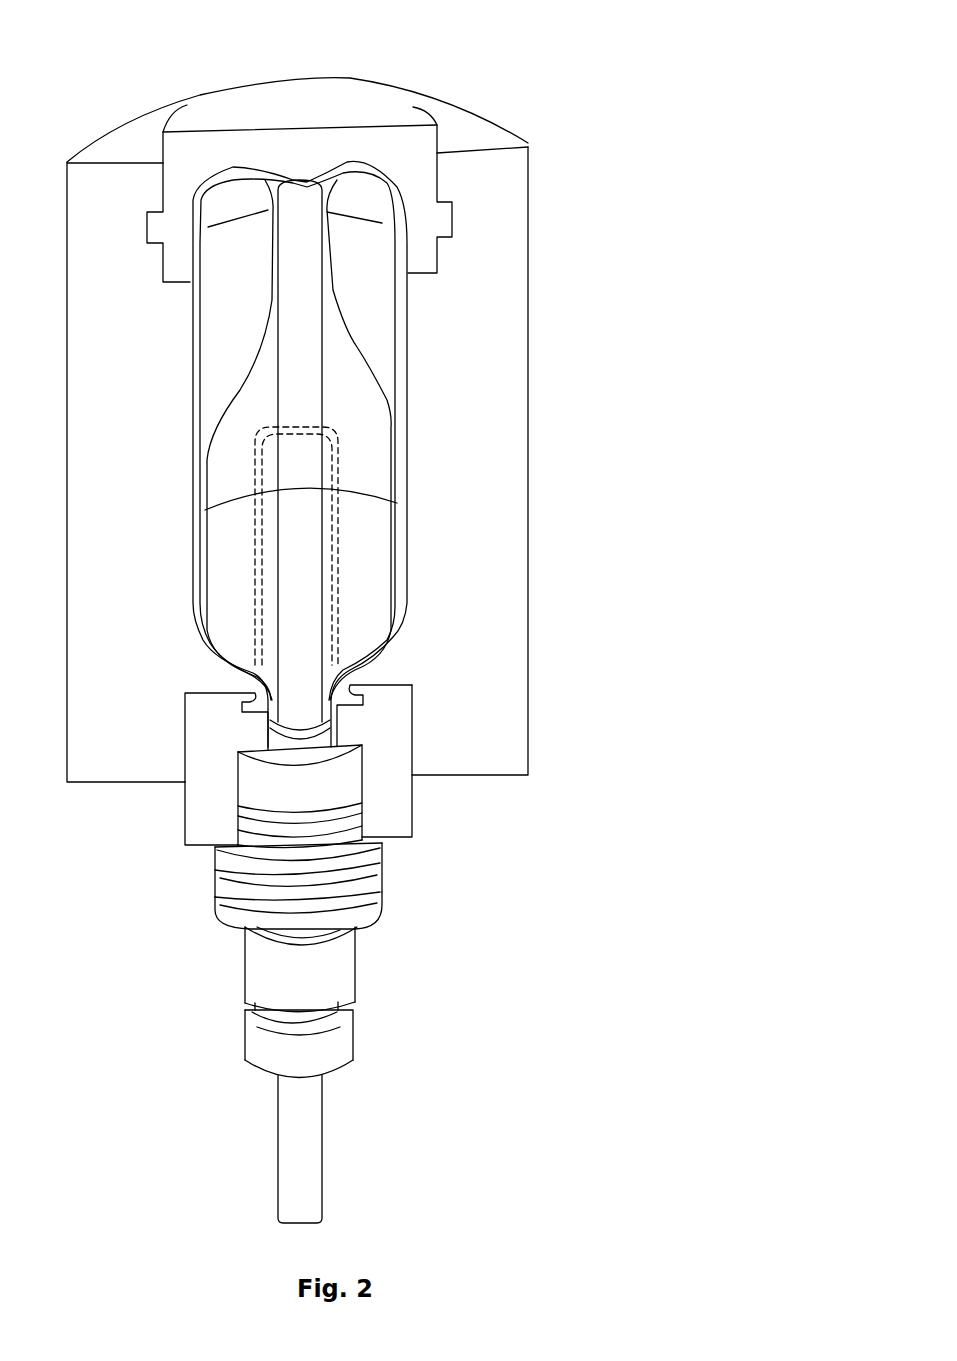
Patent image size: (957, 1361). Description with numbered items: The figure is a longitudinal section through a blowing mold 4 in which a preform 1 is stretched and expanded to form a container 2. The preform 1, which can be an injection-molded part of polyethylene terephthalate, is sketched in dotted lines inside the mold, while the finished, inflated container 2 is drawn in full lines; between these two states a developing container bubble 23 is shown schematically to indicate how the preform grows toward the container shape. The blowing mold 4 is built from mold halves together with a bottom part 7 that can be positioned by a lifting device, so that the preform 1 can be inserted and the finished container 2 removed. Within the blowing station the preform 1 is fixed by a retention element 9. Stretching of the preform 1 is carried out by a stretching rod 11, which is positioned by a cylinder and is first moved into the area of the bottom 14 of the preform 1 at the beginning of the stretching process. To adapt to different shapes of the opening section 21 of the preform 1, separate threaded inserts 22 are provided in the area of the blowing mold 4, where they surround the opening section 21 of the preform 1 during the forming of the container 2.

The preform 1 is at (338, 582).
The container 2 is at (405, 370).
The blowing mold 4 is at (488, 433).
The bottom part 7 is at (380, 93).
The retention element 9 is at (372, 900).
The stretching rod 11 is at (278, 1162).
The bottom 14 is at (333, 427).
The opening section 21 is at (337, 715).
The threaded inserts 22 is at (397, 800).
The developing container bubble 23 is at (350, 333).